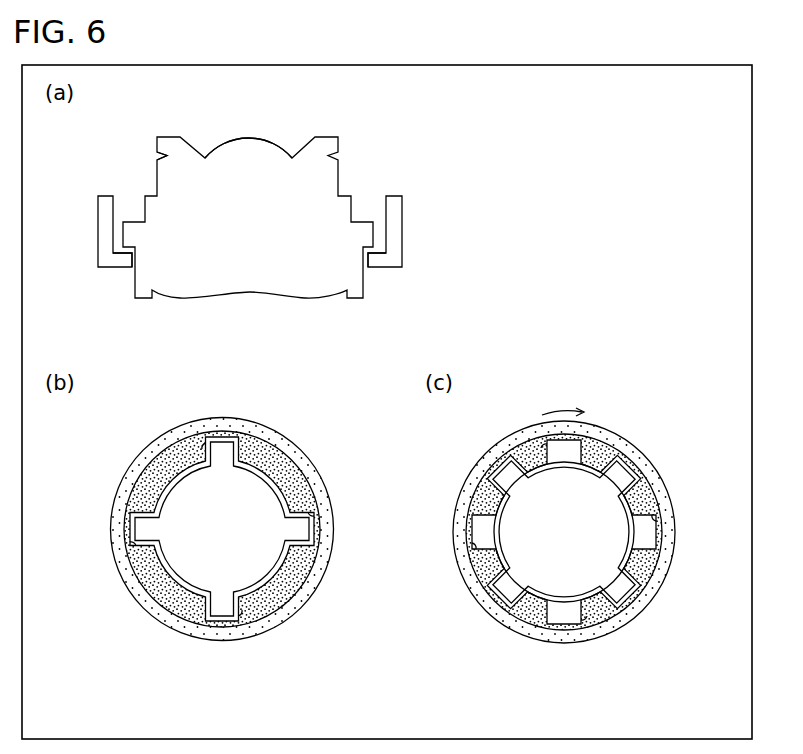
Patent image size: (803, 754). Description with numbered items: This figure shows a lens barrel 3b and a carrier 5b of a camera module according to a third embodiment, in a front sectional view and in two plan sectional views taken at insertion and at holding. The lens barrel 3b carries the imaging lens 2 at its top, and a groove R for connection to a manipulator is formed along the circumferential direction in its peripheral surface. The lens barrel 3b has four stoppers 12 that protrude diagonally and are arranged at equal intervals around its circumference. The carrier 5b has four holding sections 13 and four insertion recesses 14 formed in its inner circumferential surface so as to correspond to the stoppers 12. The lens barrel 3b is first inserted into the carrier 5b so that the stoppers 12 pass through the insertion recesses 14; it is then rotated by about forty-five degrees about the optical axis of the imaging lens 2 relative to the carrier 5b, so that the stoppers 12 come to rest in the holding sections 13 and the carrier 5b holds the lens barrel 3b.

The imaging lens 2 is at (252, 139).
The groove R is at (157, 153).
The lens barrel 3b is at (157, 180).
The carrier 5b is at (400, 232).
The stopper 12 is at (137, 219).
The holding section 13 is at (121, 257).
The insertion recess 14 is at (198, 430).